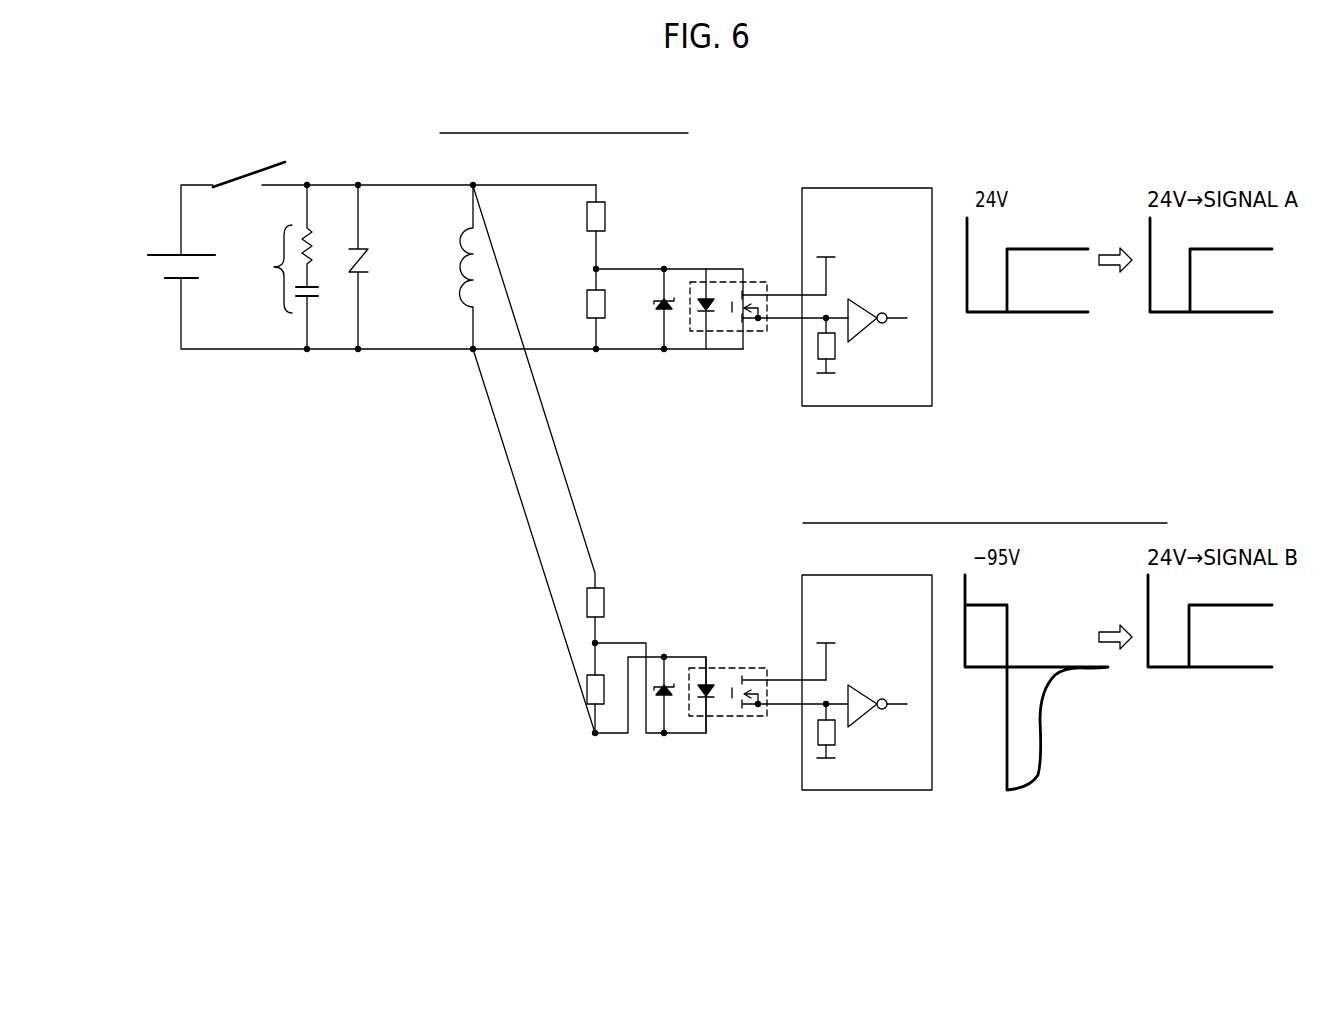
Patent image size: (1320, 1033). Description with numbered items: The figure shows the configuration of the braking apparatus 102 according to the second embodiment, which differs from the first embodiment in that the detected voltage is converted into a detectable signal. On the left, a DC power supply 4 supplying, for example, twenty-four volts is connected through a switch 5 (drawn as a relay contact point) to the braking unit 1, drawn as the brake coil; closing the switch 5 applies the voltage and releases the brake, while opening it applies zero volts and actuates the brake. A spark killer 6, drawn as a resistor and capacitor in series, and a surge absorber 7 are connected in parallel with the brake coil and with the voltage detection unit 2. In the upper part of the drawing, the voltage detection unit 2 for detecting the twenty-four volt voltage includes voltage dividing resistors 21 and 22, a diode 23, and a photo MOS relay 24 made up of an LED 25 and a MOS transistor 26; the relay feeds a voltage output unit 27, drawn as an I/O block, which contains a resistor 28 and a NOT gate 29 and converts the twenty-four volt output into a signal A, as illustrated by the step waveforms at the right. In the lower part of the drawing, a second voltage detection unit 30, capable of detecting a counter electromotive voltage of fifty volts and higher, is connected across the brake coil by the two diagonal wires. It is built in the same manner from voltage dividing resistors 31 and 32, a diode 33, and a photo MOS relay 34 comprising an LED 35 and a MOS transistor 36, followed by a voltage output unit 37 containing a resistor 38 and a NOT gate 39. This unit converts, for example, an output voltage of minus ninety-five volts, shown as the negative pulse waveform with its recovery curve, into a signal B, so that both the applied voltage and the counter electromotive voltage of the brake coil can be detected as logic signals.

The braking unit 1 is at (462, 300).
The voltage detection unit 2 is at (932, 160).
The DC power supply 4 is at (163, 245).
The switch 5 is at (239, 165).
The spark killer 6 is at (273, 267).
The surge absorber 7 is at (374, 258).
The voltage dividing resistor 21 is at (605, 216).
The voltage dividing resistor 22 is at (605, 305).
The diode 23 is at (655, 305).
The photo MOS relay 24 is at (730, 282).
The LED 25 is at (717, 333).
The MOS transistor 26 is at (748, 333).
The voltage output unit 27 is at (832, 188).
The resistor 28 is at (835, 347).
The NOT gate 29 is at (866, 330).
The voltage detection unit 30 is at (927, 545).
The voltage dividing resistor 31 is at (604, 603).
The voltage dividing resistor 32 is at (604, 690).
The diode 33 is at (668, 683).
The photo MOS relay 34 is at (740, 668).
The LED 35 is at (712, 703).
The MOS transistor 36 is at (748, 712).
The voltage output unit 37 is at (832, 575).
The resistor 38 is at (835, 735).
The NOT gate 39 is at (866, 716).
The braking apparatus 102 is at (400, 128).